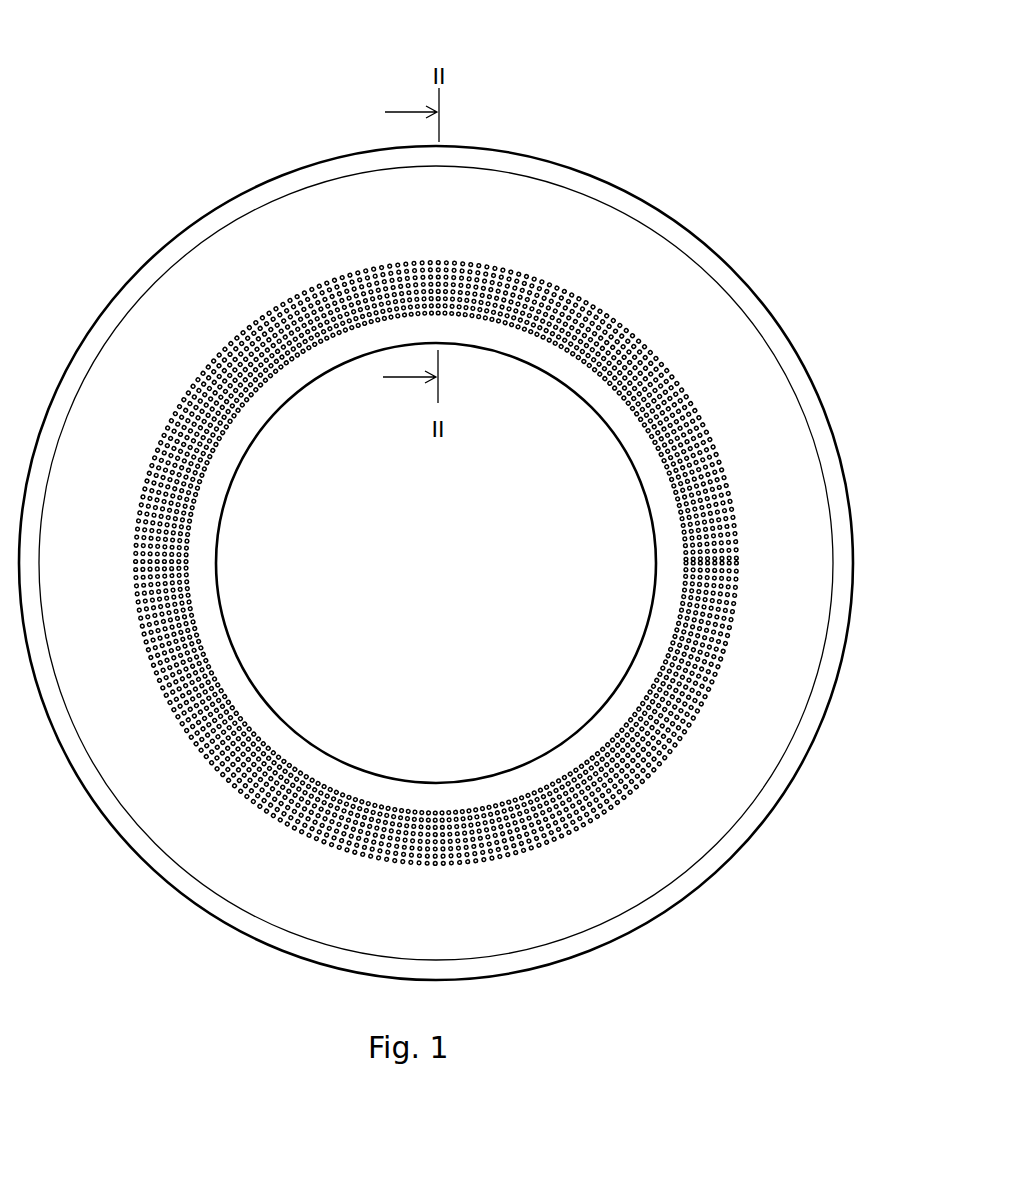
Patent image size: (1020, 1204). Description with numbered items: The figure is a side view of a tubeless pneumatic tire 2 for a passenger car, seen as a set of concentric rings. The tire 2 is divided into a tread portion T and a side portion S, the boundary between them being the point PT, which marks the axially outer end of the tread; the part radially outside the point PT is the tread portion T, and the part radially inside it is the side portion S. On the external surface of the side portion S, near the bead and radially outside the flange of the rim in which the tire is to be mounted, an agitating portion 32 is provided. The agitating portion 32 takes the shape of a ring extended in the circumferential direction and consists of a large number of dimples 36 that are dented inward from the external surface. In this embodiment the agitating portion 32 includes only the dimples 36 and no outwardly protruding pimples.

The tire 2 is at (669, 34).
The agitating portion 32 is at (587, 297).
The dimples 36 is at (537, 278).
The side portion S is at (128, 315).
The tread portion T is at (307, 165).
The point PT is at (247, 217).